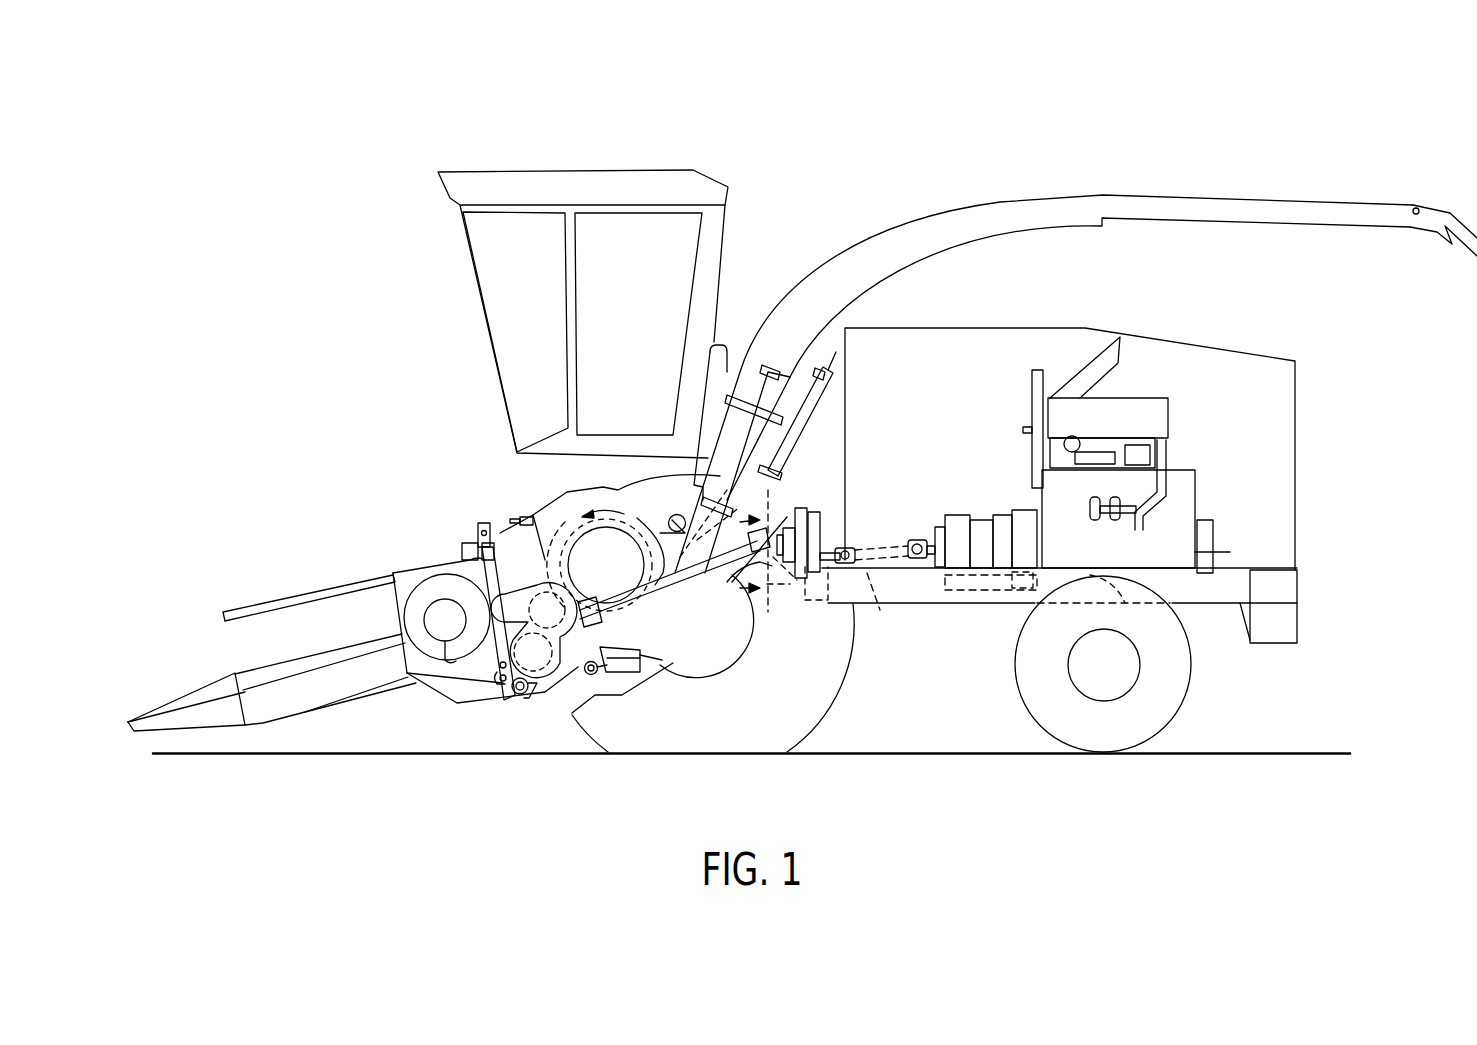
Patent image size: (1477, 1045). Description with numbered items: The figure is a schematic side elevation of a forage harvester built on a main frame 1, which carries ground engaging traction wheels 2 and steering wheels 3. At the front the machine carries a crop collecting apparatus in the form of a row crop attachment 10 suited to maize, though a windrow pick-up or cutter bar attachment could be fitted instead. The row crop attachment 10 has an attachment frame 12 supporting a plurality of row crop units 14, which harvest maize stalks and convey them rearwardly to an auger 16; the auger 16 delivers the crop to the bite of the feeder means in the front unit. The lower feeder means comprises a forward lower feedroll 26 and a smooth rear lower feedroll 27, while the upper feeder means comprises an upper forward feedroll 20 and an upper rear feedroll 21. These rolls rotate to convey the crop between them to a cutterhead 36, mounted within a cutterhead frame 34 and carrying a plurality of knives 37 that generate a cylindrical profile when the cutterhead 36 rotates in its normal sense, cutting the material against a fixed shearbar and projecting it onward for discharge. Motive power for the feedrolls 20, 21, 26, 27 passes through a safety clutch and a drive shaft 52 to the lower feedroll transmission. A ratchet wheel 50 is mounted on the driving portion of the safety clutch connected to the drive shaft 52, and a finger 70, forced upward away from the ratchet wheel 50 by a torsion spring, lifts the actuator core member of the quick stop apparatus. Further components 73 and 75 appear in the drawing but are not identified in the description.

The main frame 1 is at (944, 650).
The ground engaging traction wheels 2 is at (706, 742).
The steering wheels 3 is at (1098, 740).
The row crop attachment 10 is at (315, 576).
The attachment frame 12 is at (450, 690).
The row crop units 14 is at (281, 705).
The auger 16 is at (433, 588).
The upper forward feedroll 20 is at (480, 545).
The upper rear feedroll 21 is at (520, 543).
The forward lower feedroll 26 is at (519, 696).
The rear lower feedroll 27 is at (608, 680).
The cutterhead frame 34 is at (492, 486).
The cutterhead 36 is at (565, 540).
The knives 37 is at (583, 555).
The ratchet wheel 50 is at (664, 507).
The drive shaft 52 is at (1036, 168).
The finger 70 is at (1190, 492).
The universal joint 73 is at (850, 580).
The gearbox 75 is at (811, 560).